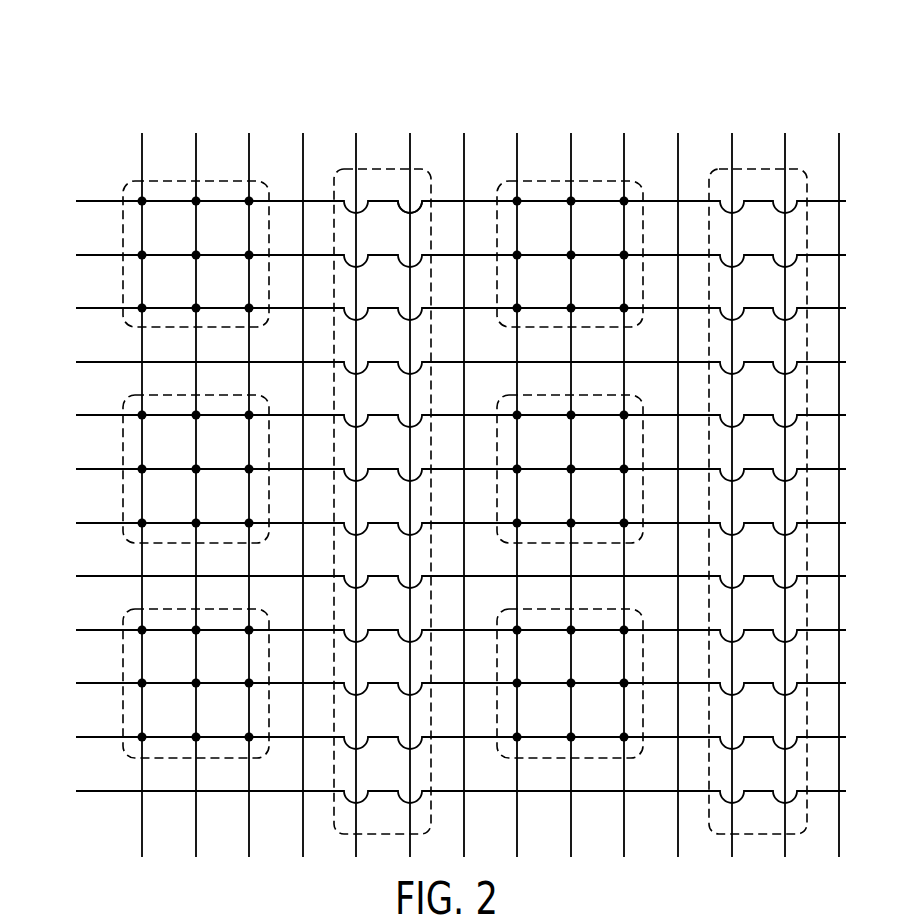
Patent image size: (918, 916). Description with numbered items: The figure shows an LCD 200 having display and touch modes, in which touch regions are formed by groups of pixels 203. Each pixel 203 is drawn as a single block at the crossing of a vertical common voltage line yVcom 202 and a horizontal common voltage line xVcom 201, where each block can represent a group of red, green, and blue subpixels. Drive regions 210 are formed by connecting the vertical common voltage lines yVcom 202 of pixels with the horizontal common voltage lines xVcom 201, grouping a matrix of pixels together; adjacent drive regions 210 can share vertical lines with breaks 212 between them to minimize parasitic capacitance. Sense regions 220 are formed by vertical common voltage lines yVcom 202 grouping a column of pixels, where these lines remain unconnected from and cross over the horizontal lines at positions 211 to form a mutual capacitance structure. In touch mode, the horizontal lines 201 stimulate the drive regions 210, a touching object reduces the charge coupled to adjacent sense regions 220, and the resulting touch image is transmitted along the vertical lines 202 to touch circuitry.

The LCD 200 is at (683, 74).
The horizontal common voltage line xVcom 201 is at (82, 200).
The vertical common voltage line yVcom 202 is at (141, 140).
The pixel 203 is at (238, 207).
The drive region 210 is at (178, 178).
The cross over position 211 is at (397, 190).
The break 212 is at (131, 370).
The sense region 220 is at (390, 168).